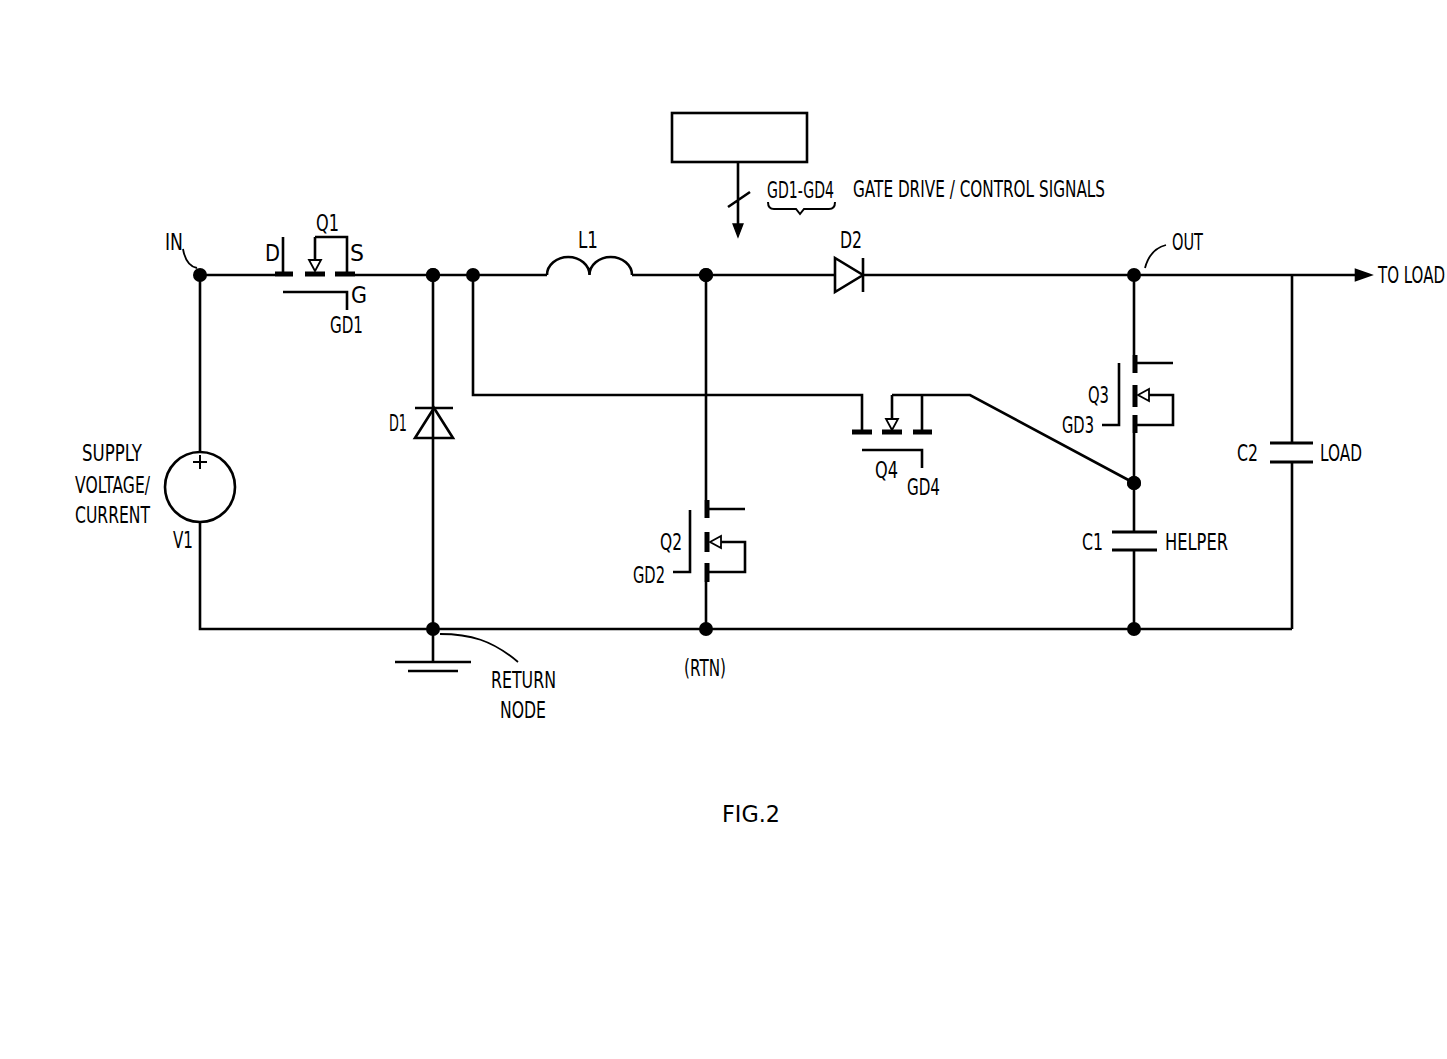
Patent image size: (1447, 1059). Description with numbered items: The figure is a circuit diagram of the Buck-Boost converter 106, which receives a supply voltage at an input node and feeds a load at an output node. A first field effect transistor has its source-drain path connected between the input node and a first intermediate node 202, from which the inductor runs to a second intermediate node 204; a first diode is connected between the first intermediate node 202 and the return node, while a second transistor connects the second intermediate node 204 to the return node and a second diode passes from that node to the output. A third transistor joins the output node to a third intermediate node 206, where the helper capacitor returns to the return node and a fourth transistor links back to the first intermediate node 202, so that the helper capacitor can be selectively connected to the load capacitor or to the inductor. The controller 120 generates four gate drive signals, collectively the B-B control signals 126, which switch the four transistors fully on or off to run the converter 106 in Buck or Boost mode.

The B-B converter 106 is at (449, 190).
The controller 120 is at (672, 138).
The B-B control signals 126 is at (770, 201).
The first intermediate node 202 is at (431, 268).
The second intermediate node 204 is at (700, 268).
The third intermediate node 206 is at (1126, 483).